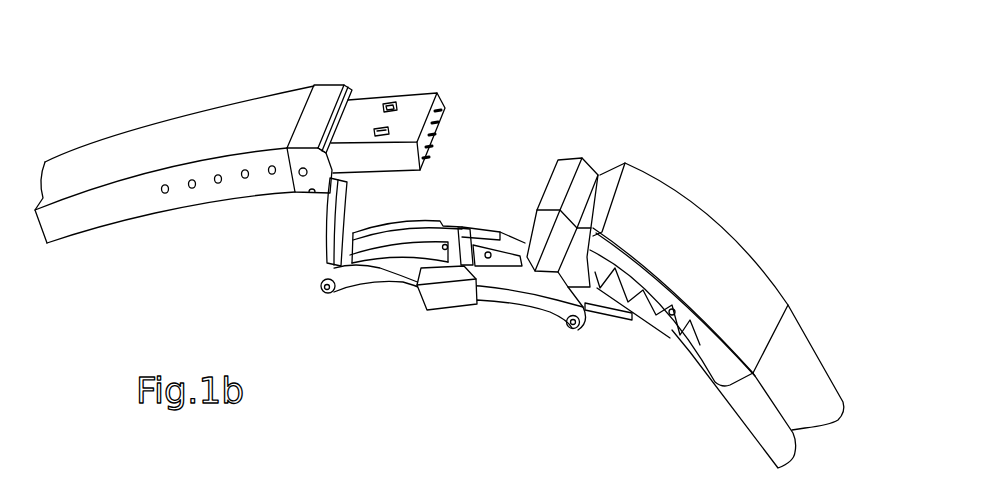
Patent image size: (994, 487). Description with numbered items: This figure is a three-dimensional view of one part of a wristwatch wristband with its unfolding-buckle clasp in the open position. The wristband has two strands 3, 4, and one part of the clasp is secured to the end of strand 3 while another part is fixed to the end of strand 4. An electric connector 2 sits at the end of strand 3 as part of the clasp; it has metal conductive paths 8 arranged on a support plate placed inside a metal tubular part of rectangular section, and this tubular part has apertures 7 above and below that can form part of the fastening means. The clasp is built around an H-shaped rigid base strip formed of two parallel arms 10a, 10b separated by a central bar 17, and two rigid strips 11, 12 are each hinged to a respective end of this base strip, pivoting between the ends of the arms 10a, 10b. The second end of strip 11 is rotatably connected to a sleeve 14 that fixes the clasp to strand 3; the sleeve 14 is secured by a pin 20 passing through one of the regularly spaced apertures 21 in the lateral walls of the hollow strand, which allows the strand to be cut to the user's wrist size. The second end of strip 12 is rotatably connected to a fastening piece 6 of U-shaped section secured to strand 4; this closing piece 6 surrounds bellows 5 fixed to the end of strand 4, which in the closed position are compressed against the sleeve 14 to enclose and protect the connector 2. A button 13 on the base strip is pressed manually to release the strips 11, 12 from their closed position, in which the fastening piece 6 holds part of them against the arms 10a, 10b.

The strand 3 is at (205, 118).
The sleeve 14 is at (323, 90).
The electric connector 2 is at (417, 101).
The apertures 7 is at (390, 130).
The electric connection metal conductive paths 8 is at (446, 112).
The bellows 5 is at (587, 183).
The fastening piece 6 is at (707, 237).
The arm 10b is at (417, 225).
The central bar 17 is at (464, 258).
The apertures 21 is at (219, 183).
The pin 20 is at (298, 173).
The rigid strip 11 is at (328, 238).
The arm 10a is at (372, 267).
The button 13 is at (440, 295).
The rigid strip 12 is at (607, 307).
The strand 4 is at (795, 363).